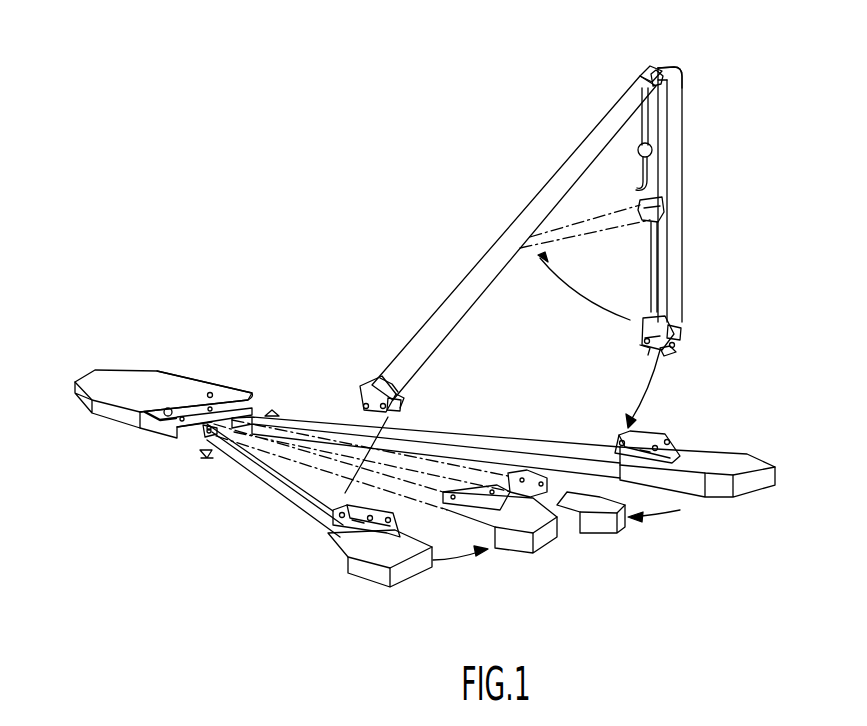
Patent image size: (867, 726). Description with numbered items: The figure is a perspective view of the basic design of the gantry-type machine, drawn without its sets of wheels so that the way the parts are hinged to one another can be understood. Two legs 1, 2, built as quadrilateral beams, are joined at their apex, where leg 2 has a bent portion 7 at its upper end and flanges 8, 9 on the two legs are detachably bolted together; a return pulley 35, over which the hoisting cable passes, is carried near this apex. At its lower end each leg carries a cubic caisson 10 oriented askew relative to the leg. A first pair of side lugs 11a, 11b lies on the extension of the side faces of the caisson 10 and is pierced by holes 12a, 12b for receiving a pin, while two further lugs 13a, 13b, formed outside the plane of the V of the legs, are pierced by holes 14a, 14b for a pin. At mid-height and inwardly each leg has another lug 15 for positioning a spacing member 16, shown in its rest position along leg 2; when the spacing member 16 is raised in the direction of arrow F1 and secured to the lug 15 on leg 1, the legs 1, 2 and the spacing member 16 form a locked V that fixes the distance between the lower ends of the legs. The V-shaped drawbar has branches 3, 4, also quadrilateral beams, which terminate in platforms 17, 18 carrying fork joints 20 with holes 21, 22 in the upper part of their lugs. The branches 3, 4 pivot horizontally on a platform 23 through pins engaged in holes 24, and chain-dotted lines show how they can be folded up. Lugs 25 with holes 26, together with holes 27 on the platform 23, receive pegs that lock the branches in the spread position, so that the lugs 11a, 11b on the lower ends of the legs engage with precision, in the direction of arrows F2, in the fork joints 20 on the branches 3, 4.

The leg 1 is at (500, 250).
The leg 2 is at (672, 284).
The branch 3 is at (258, 492).
The branch 4 is at (552, 436).
The bent portion 7 is at (670, 66).
The flange 8 is at (636, 66).
The flange 9 is at (651, 60).
The cubic caisson 10 is at (648, 330).
The side lug 11a is at (680, 348).
The side lug 11b is at (642, 342).
The hole 12a is at (358, 408).
The hole 12b is at (640, 346).
The lug 13a is at (410, 392).
The lug 13b is at (676, 328).
The hole 14a is at (388, 384).
The hole 14b is at (667, 350).
The lug 15 is at (646, 218).
The spacing member 16 is at (652, 290).
The platform 17 is at (398, 558).
The platform 18 is at (740, 468).
The fork joint 20 is at (678, 450).
The hole 21 is at (618, 440).
The hole 22 is at (668, 442).
The platform 23 is at (130, 380).
The hole 24 is at (179, 402).
The lug 25 is at (207, 460).
The hole 26 is at (203, 432).
The hole 27 is at (158, 418).
The return pulley 35 is at (642, 118).
The arrow F1 is at (583, 286).
The arrow F2 is at (507, 429).